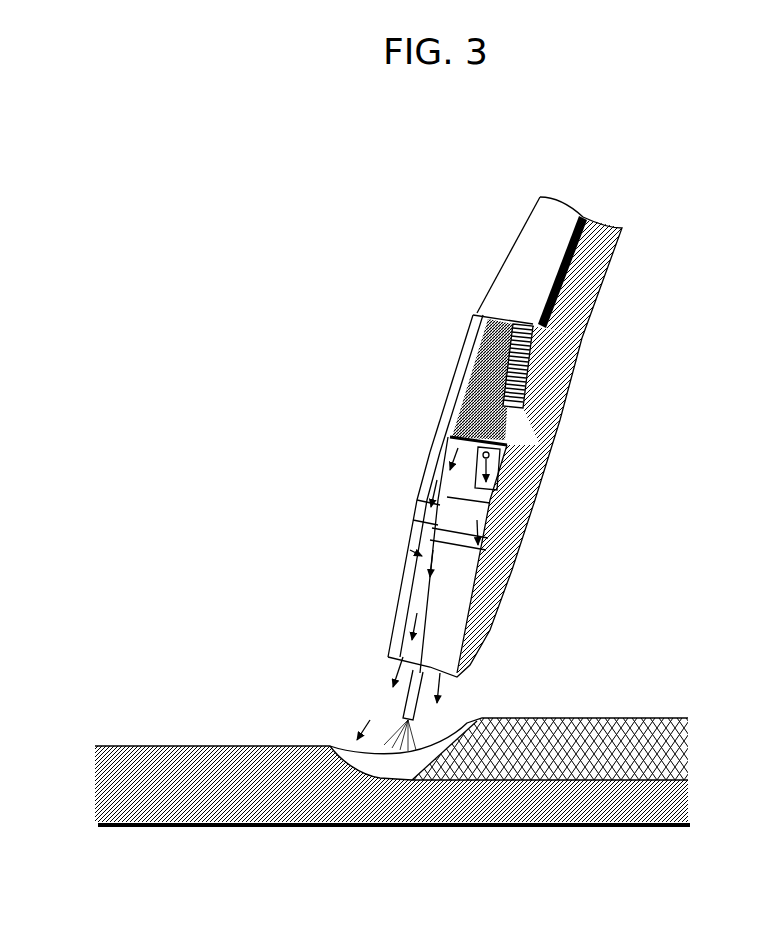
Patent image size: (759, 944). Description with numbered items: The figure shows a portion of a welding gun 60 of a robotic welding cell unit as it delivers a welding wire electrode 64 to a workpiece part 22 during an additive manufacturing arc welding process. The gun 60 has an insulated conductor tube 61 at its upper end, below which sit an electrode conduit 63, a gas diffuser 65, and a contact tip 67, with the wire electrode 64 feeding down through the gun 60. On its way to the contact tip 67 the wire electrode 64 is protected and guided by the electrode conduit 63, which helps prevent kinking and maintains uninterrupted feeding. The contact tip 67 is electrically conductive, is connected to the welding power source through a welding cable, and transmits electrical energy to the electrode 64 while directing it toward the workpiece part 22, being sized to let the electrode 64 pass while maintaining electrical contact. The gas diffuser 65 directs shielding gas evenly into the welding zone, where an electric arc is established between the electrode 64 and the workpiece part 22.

The welding gun 60 is at (633, 202).
The insulated conductor tube 61 is at (512, 250).
The electrode conduit 63 is at (522, 383).
The gas diffuser 65 is at (492, 502).
The contact tip 67 is at (411, 593).
The wire electrode 64 is at (393, 700).
The workpiece part 22 is at (127, 745).